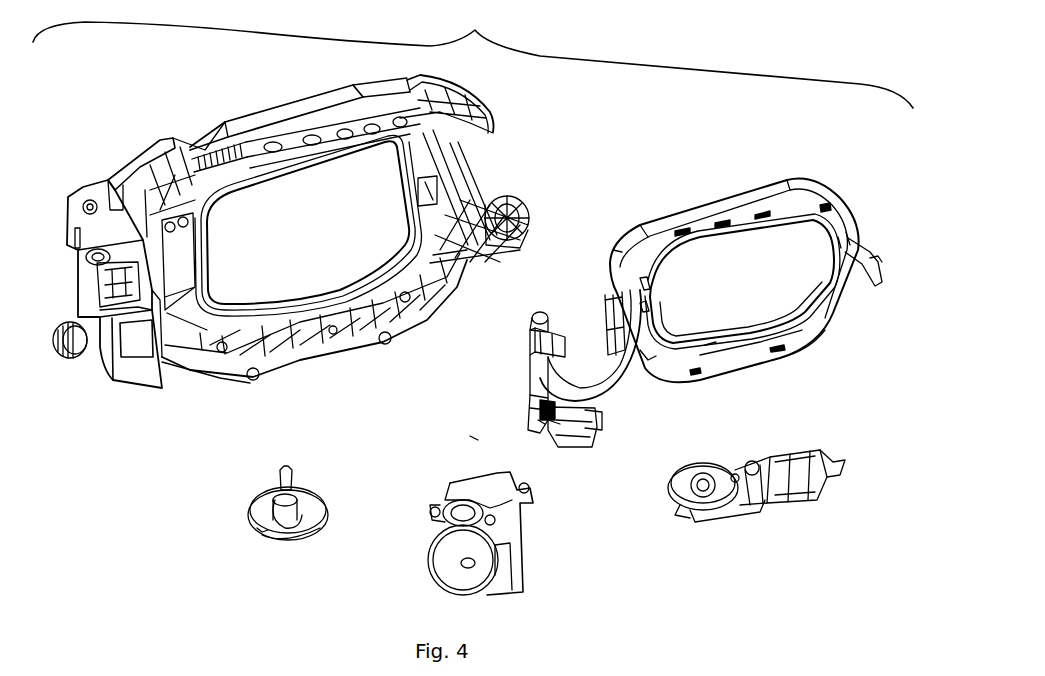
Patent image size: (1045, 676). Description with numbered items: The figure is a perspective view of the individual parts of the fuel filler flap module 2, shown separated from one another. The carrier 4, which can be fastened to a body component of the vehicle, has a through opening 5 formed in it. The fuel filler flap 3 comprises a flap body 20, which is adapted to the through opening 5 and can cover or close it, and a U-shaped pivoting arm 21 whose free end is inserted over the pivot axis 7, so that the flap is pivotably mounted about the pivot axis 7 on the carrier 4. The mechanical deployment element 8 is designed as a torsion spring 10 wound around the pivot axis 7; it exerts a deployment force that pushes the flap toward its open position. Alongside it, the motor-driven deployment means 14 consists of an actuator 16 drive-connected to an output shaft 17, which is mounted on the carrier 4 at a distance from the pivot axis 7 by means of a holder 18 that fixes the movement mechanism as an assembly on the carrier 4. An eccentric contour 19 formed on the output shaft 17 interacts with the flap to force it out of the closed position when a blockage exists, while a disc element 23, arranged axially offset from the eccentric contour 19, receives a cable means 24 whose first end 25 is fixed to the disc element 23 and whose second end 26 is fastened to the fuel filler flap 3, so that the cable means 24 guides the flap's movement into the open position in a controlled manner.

The fuel filler flap module 2 is at (473, 54).
The fuel filler flap 3 is at (712, 178).
The carrier 4 is at (233, 107).
The through opening 5 is at (302, 248).
The pivot axis 7 is at (534, 316).
The mechanical deployment element 8 is at (525, 394).
The torsion spring 10 is at (540, 418).
The motor-driven deployment means 14 is at (775, 525).
The actuator 16 is at (764, 462).
The output shaft 17 is at (283, 488).
The holder 18 is at (535, 528).
The eccentric contour 19 is at (258, 507).
The flap body 20 is at (828, 338).
The pivoting arm 21 is at (642, 362).
The disc element 23 is at (310, 545).
The cable means 24 is at (470, 436).
The first end 25 is at (540, 420).
The second end 26 is at (592, 420).